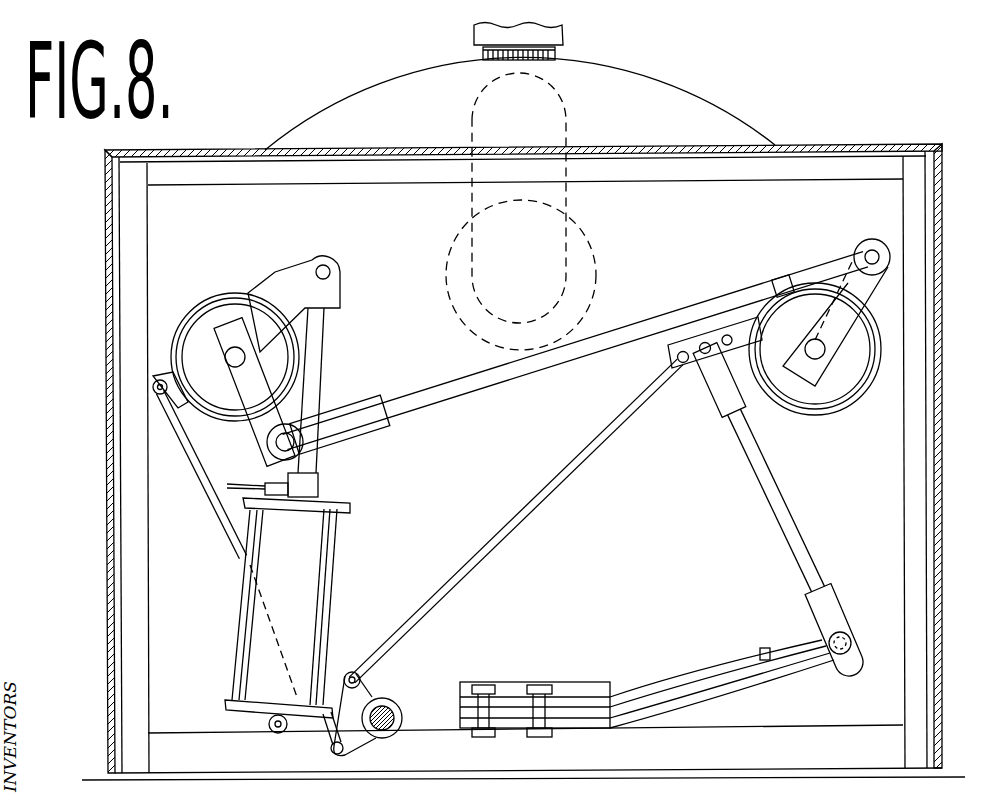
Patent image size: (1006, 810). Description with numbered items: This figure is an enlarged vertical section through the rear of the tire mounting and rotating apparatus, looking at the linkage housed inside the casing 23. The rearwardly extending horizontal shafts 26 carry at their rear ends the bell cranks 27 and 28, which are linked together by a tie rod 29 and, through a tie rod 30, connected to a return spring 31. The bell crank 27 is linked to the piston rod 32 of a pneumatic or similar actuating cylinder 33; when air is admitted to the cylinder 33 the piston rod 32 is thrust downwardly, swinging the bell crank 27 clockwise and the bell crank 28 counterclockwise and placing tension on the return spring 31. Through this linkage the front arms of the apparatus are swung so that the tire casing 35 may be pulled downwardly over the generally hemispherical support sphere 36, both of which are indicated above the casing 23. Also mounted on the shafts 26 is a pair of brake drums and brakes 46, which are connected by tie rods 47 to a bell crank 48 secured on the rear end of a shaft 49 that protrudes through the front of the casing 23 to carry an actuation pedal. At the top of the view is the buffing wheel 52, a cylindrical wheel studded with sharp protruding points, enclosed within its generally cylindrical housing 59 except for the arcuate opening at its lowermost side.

The casing 23 is at (107, 494).
The horizontal shafts 26 is at (232, 358).
The bell crank 27 is at (276, 375).
The bell crank 28 is at (878, 306).
The tie rod 29 is at (608, 333).
The tie rod 30 is at (790, 521).
The return spring 31 is at (790, 660).
The piston rod 32 is at (320, 458).
The actuating cylinder 33 is at (340, 588).
The tire casing 35 is at (757, 143).
The support sphere 36 is at (566, 100).
The brake drums and brakes 46 is at (208, 291).
The tie rods 47 is at (222, 522).
The bell crank 48 is at (382, 690).
The shaft 49 is at (400, 708).
The buffing wheel 52 is at (559, 52).
The housing 59 is at (566, 33).